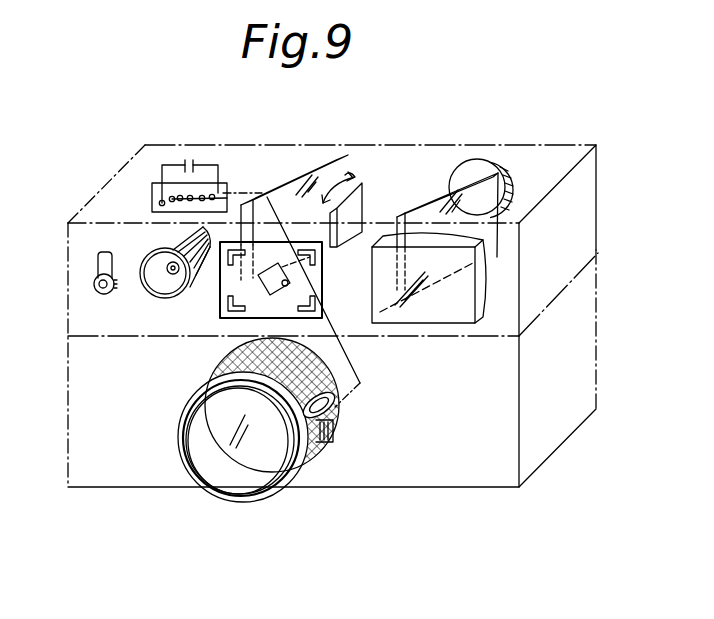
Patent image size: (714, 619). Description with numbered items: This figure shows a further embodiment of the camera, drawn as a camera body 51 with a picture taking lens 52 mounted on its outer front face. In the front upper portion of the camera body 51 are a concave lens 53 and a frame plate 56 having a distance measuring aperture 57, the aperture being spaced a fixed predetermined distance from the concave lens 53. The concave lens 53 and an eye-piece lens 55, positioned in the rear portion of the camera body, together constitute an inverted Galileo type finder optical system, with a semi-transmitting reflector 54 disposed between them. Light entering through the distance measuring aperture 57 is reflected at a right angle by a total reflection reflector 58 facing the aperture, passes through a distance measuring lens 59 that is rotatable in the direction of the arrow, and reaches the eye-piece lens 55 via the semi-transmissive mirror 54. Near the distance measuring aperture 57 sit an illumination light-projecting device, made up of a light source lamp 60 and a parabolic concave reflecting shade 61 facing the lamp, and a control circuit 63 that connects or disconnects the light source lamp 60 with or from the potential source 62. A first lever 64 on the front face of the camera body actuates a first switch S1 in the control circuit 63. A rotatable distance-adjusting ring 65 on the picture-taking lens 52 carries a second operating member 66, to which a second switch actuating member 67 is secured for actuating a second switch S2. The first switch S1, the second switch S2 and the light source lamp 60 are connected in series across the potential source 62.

The camera body 51 is at (458, 467).
The picture taking lens 52 is at (222, 476).
The concave lens 53 is at (458, 318).
The semi-transmitting reflector 54 is at (432, 205).
The eye-piece lens 55 is at (501, 155).
The frame plate 56 is at (320, 287).
The distance measuring aperture 57 is at (291, 280).
The total reflection reflector 58 is at (322, 164).
The distance measuring lens 59 is at (360, 201).
The light source lamp 60 is at (176, 277).
The parabolic concave reflecting shade 61 is at (180, 231).
The potential source 62 is at (191, 162).
The control circuit 63 is at (158, 184).
The first lever 64 is at (96, 270).
The distance-adjusting ring 65 is at (234, 350).
The second operating member 66 is at (333, 438).
The second switch actuating member 67 is at (338, 408).
The first switch S1 is at (190, 197).
The second switch S2 is at (212, 195).